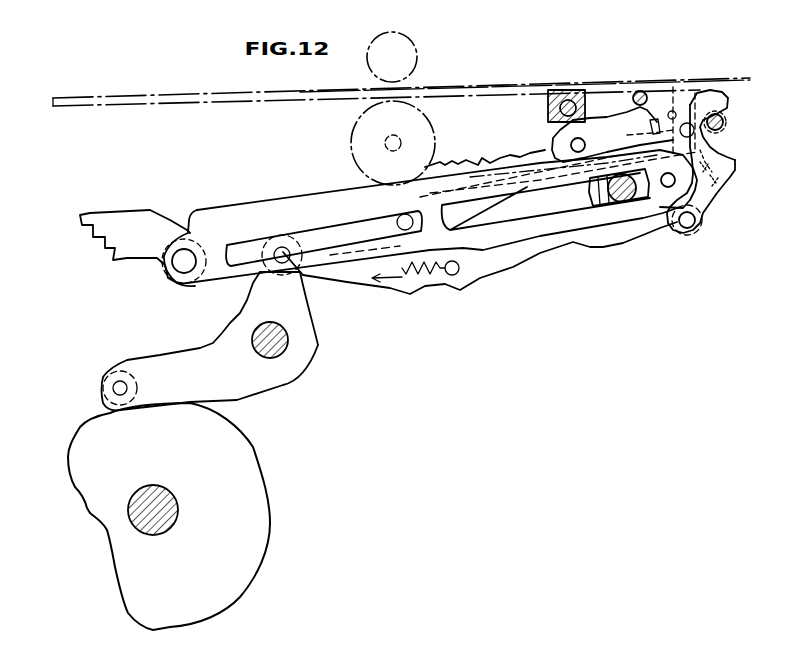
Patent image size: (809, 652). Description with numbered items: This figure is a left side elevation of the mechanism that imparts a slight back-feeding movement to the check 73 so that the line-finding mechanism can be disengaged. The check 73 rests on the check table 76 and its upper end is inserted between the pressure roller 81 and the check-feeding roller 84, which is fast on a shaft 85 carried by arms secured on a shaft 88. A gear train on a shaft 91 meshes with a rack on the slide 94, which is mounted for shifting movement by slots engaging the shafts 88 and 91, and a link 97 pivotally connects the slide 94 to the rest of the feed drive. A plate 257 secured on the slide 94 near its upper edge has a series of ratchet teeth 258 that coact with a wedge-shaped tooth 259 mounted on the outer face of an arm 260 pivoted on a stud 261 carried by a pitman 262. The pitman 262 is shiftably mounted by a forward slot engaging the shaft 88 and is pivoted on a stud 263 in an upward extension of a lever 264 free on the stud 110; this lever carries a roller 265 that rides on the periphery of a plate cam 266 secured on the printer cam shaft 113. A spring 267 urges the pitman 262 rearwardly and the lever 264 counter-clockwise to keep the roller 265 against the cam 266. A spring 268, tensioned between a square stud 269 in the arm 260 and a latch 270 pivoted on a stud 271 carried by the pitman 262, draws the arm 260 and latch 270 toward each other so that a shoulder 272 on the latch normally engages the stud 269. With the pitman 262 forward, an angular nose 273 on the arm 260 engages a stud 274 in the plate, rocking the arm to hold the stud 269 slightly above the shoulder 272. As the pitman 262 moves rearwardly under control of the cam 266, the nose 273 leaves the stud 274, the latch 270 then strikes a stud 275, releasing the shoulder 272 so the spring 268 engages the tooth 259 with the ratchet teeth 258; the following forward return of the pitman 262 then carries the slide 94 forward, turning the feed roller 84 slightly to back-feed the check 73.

The check 73 is at (510, 86).
The check table 76 is at (208, 96).
The pressure roller 81 is at (412, 56).
The check-feeding roller 84 is at (425, 102).
The shaft 85 is at (403, 142).
The shaft 88 is at (590, 196).
The shaft 91 is at (397, 223).
The slide 94 is at (305, 192).
The link 97 is at (122, 213).
The stud 110 is at (278, 350).
The printer cam shaft 113 is at (165, 512).
The plate 257 is at (432, 191).
The ratchet teeth 258 is at (485, 155).
The wedge-shaped tooth 259 is at (655, 133).
The arm 260 is at (712, 100).
The stud 261 is at (568, 145).
The pitman 262 is at (512, 250).
The stud 263 is at (278, 273).
The lever 264 is at (305, 324).
The roller 265 is at (128, 386).
The plate cam 266 is at (240, 448).
The spring 267 is at (416, 287).
The spring 268 is at (705, 152).
The square stud 269 is at (681, 80).
The latch 270 is at (718, 190).
The stud 271 is at (696, 223).
The shoulder 272 is at (634, 140).
The angular nose 273 is at (720, 118).
The stud 274 is at (724, 125).
The stud 275 is at (637, 90).